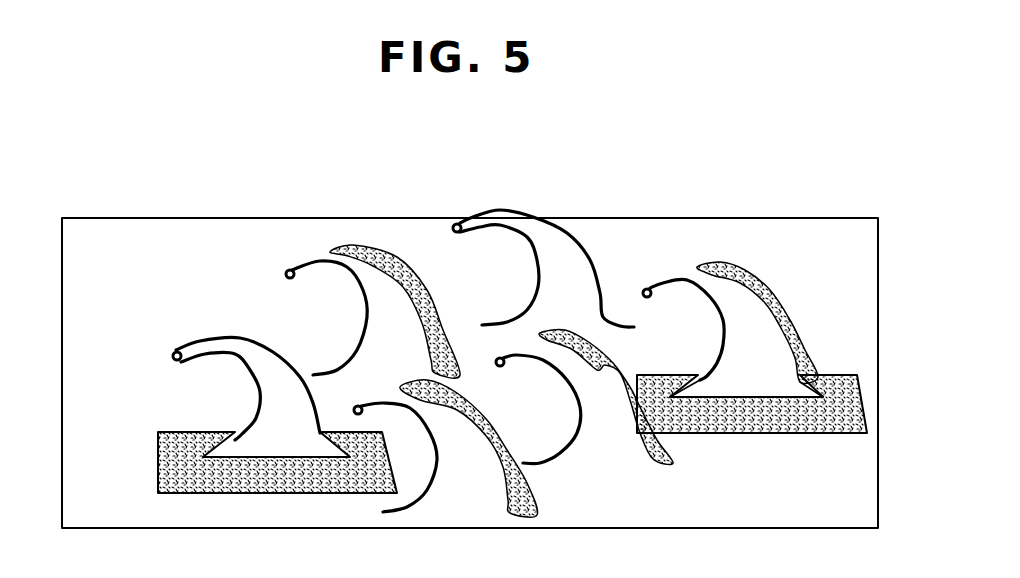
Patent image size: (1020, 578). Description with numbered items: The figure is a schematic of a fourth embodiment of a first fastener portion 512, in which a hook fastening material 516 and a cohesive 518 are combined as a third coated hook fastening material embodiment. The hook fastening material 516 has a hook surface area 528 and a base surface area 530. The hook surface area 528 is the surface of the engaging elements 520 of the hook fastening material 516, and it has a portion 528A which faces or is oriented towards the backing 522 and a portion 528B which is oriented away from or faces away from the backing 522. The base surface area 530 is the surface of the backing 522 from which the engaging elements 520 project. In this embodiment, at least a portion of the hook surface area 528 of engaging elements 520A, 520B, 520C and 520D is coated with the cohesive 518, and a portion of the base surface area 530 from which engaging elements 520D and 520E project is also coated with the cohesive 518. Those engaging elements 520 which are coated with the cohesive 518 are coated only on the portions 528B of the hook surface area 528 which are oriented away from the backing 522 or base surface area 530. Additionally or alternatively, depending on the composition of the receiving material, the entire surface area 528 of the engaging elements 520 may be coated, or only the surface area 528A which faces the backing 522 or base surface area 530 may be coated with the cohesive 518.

The first fastener portion 512 is at (158, 205).
The hook fastening material 516 is at (560, 250).
The cohesive 518 is at (843, 370).
The engaging elements 520 is at (560, 250).
The engaging element 520A is at (347, 272).
The engaging element 520B is at (460, 473).
The engaging element 520C is at (584, 400).
The engaging element 520D is at (733, 310).
The engaging element 520E is at (242, 355).
The backing 522 is at (742, 490).
The hook surface area 528 is at (683, 277).
The portion of hook surface area facing the backing 528A is at (500, 228).
The portion of hook surface area facing away from the backing 528B is at (540, 237).
The base surface area 530 is at (850, 472).